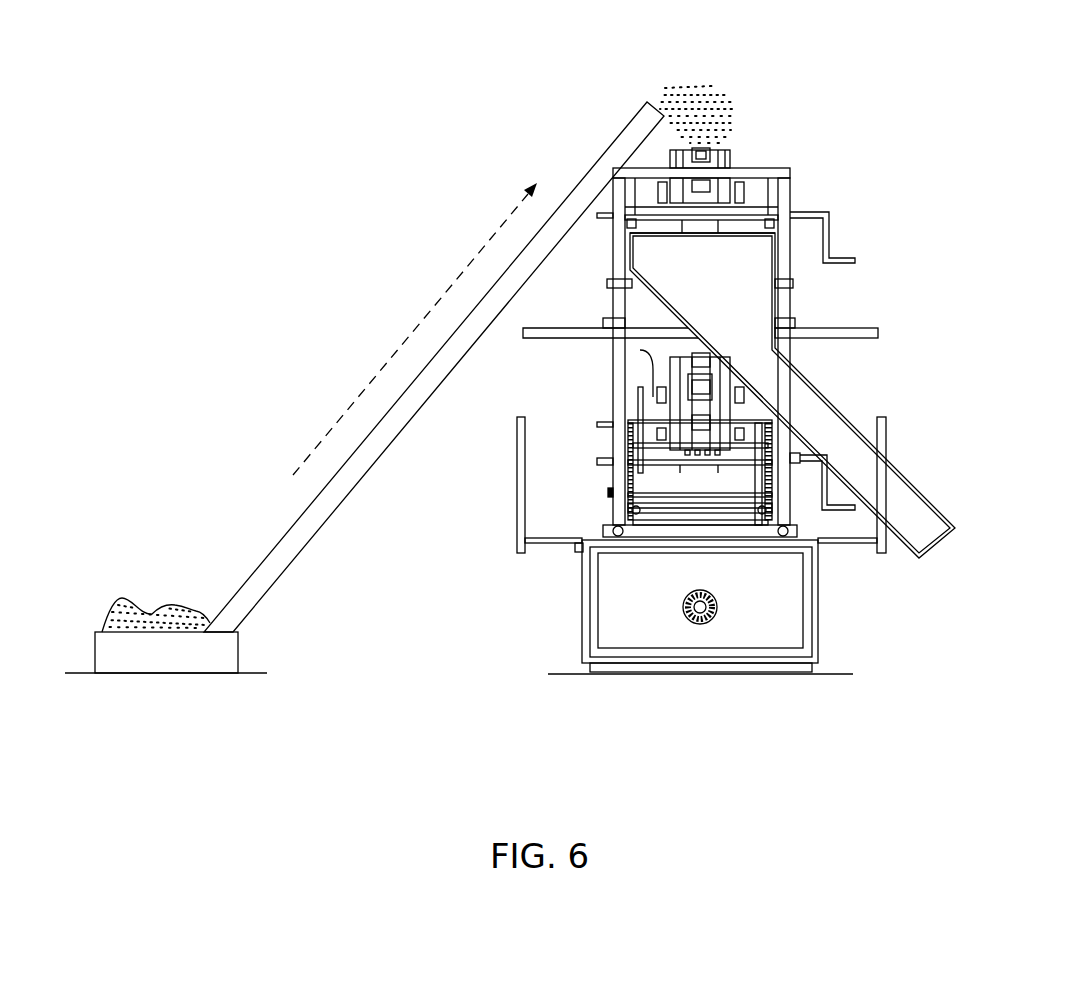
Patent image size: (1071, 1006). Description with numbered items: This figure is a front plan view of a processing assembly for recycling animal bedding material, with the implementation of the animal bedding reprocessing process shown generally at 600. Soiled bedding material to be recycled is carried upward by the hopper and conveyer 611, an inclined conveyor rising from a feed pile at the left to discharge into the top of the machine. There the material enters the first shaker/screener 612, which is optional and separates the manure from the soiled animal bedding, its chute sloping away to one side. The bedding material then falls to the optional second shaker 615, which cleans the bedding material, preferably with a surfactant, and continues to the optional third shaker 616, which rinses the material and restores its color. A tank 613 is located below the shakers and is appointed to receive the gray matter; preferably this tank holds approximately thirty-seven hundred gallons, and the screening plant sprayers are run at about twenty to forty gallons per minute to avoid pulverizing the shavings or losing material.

The animal bedding reprocessing process 600 is at (384, 112).
The hopper and conveyer 611 is at (615, 138).
The first shaker/screener 612 is at (778, 293).
The tank 613 is at (647, 652).
The second shaker 615 is at (618, 415).
The third shaker 616 is at (617, 500).